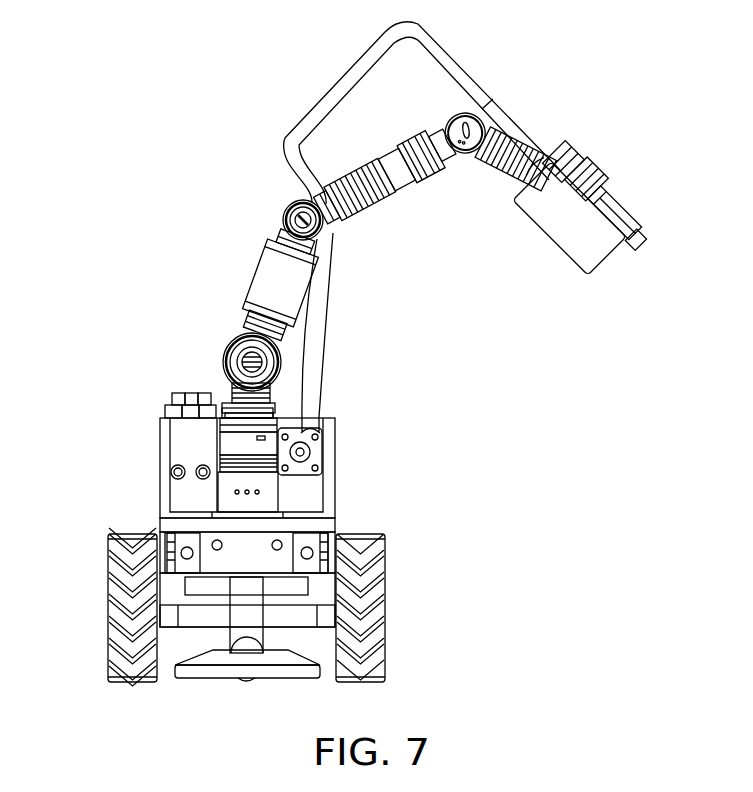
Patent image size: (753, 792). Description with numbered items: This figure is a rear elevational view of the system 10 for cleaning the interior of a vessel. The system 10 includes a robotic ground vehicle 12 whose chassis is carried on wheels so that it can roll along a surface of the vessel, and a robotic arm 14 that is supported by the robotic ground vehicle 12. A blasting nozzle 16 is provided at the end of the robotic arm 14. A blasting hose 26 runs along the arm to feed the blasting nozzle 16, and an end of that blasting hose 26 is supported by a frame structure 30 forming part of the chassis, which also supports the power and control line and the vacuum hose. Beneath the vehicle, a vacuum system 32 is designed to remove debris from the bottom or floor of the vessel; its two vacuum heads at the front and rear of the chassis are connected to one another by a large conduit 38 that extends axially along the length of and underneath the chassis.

The system 10 is at (164, 262).
The robotic ground vehicle 12 is at (101, 687).
The robotic arm 14 is at (380, 148).
The blasting nozzle 16 is at (641, 229).
The blasting hose 26 is at (458, 64).
The frame structure 30 is at (332, 477).
The vacuum system 32 is at (191, 688).
The large conduit 38 is at (553, 228).